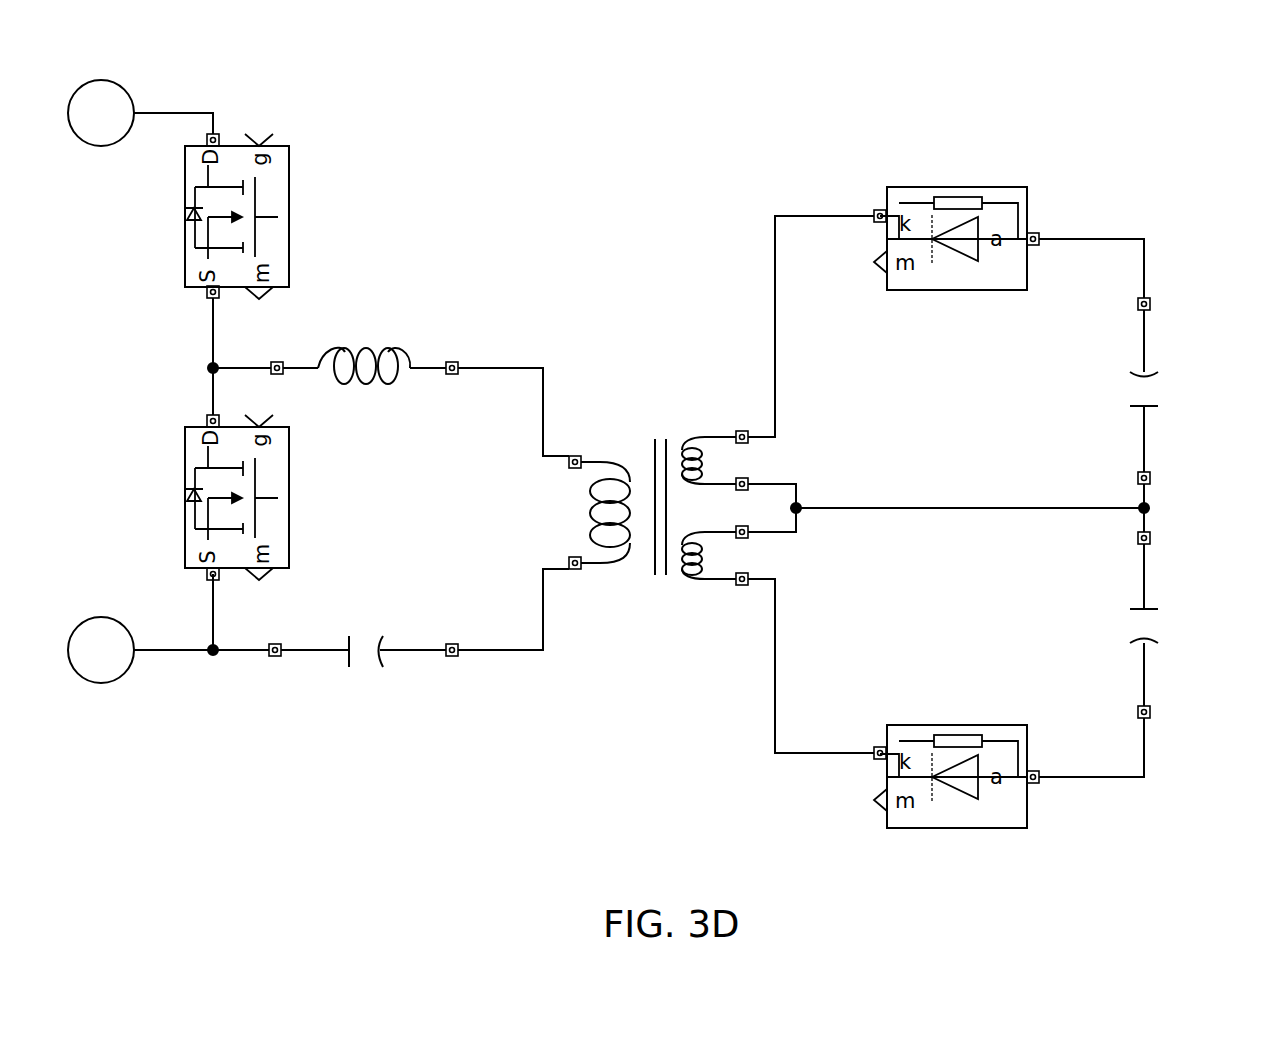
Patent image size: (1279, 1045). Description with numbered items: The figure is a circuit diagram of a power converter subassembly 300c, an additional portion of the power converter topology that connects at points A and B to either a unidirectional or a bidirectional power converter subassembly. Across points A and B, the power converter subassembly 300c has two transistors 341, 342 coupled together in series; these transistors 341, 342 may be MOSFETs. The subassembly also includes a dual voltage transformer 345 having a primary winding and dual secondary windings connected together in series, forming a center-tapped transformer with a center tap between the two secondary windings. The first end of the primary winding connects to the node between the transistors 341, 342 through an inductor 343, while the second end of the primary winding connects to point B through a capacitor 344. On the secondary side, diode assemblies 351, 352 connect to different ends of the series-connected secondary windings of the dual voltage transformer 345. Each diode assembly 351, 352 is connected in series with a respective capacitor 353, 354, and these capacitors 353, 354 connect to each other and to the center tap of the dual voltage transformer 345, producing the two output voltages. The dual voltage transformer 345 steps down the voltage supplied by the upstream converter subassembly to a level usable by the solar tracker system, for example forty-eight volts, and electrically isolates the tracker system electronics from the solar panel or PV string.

The power converter subassembly 300c is at (1115, 118).
The transistor 341 is at (286, 146).
The transistor 342 is at (289, 505).
The inductor 343 is at (400, 348).
The capacitor 344 is at (349, 636).
The dual voltage transformer 345 is at (614, 387).
The diode assembly 351 is at (958, 187).
The diode assembly 352 is at (958, 725).
The capacitor 353 is at (1152, 373).
The capacitor 354 is at (1148, 645).